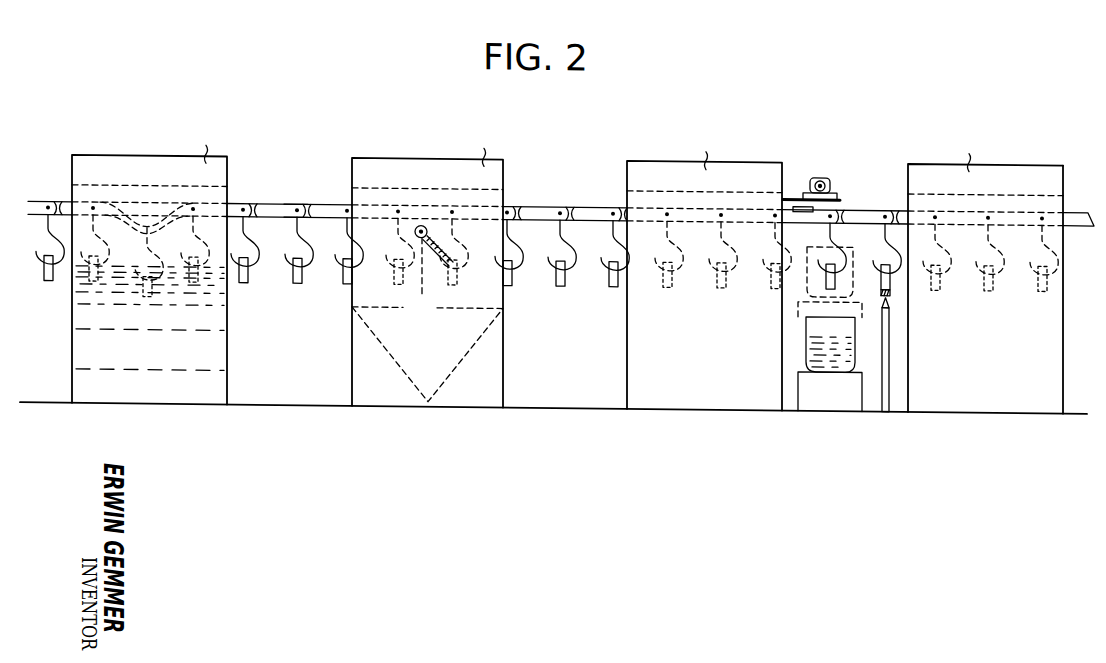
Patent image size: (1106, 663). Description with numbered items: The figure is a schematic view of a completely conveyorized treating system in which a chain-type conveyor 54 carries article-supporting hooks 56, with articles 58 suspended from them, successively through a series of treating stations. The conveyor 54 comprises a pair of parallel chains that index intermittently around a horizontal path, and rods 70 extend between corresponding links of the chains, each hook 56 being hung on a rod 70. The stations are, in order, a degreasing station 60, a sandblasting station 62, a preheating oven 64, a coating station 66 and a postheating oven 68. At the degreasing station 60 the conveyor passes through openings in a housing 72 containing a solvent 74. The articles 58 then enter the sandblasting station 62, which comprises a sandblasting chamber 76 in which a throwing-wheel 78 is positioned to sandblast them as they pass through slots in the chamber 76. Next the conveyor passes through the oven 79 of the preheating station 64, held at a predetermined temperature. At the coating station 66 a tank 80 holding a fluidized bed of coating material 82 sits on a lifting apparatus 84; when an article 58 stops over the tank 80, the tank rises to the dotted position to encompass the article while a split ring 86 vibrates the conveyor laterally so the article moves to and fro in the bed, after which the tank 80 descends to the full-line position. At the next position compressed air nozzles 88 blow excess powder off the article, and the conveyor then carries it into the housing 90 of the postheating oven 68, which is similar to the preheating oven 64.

The chain-type conveyor 54 is at (548, 201).
The article-supporting hook 56 is at (255, 237).
The article 58 is at (248, 272).
The degreasing station 60 is at (131, 271).
The sandblasting station 62 is at (411, 272).
The preheating oven 64 is at (711, 427).
The coating station 66 is at (843, 294).
The postheating oven 68 is at (1002, 286).
The rod 70 is at (292, 207).
The housing 72 is at (68, 364).
The solvent 74 is at (80, 317).
The sandblasting chamber 76 is at (358, 289).
The throwing-wheel 78 is at (430, 270).
The oven 79 is at (780, 178).
The tank 80 is at (858, 271).
The fluidized bed of coating material 82 is at (807, 279).
The lifting apparatus 84 is at (860, 371).
The split ring 86 is at (822, 219).
The compressed air nozzle 88 is at (889, 337).
The housing 90 is at (1053, 301).